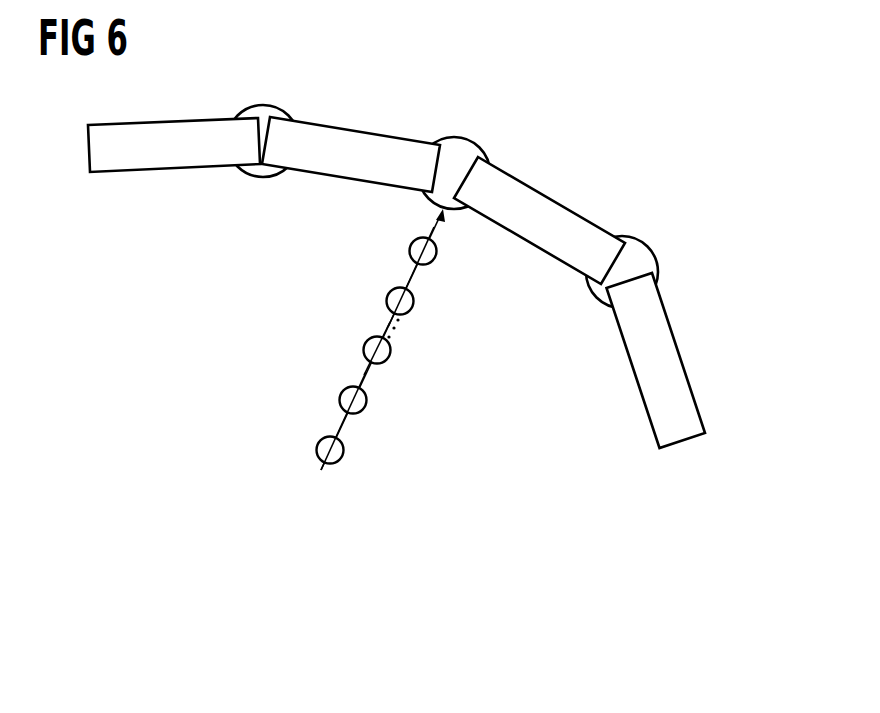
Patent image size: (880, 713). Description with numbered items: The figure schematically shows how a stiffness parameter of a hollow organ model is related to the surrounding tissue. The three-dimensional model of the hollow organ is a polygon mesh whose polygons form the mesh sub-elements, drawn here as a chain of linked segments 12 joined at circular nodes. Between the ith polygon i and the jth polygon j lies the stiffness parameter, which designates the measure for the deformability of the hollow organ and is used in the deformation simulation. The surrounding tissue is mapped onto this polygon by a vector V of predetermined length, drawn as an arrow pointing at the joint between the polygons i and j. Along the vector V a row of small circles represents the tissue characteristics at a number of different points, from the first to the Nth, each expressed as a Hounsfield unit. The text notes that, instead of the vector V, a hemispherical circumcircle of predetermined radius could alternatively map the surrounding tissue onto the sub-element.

The arm segment (link) of the robot arm 12 is at (425, 242).
The ith polygon i is at (351, 154).
The jth polygon j is at (539, 220).
The vector V is at (362, 363).